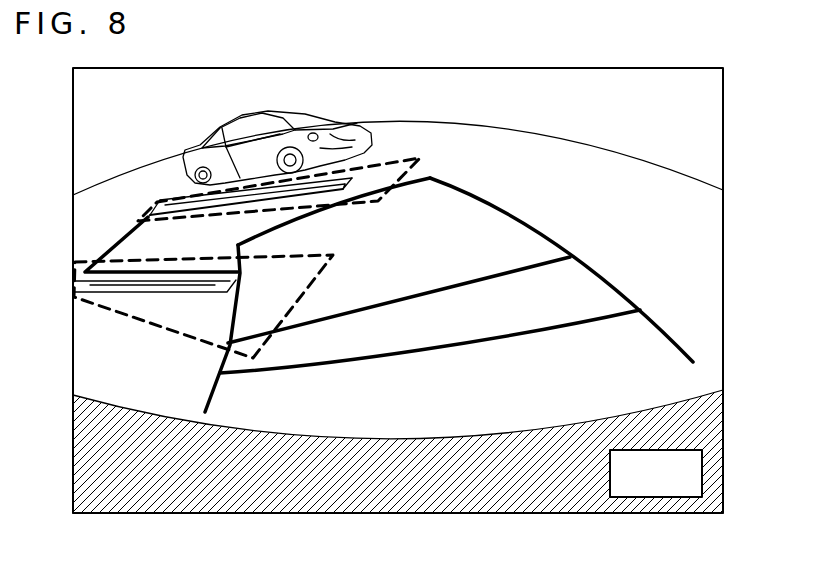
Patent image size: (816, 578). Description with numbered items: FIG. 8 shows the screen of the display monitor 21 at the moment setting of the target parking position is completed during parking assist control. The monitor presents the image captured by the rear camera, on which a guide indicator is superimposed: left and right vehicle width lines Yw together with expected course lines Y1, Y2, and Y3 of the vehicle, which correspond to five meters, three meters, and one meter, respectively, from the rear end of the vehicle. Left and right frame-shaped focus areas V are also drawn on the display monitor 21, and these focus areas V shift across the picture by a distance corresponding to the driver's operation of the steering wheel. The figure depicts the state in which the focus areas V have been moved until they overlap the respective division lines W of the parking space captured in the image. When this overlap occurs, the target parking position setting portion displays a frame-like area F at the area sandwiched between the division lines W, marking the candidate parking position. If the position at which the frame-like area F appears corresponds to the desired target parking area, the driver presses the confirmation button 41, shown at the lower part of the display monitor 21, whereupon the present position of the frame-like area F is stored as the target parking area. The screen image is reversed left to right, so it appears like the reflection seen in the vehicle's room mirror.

The display monitor 21 is at (725, 212).
The confirmation button 41 is at (657, 497).
The division lines W is at (165, 207).
The frame-like area F is at (115, 246).
The focus areas V is at (422, 158).
The expected course line Y1 is at (378, 192).
The expected course line Y2 is at (473, 280).
The expected course line Y3 is at (413, 355).
The vehicle width lines Yw is at (605, 268).